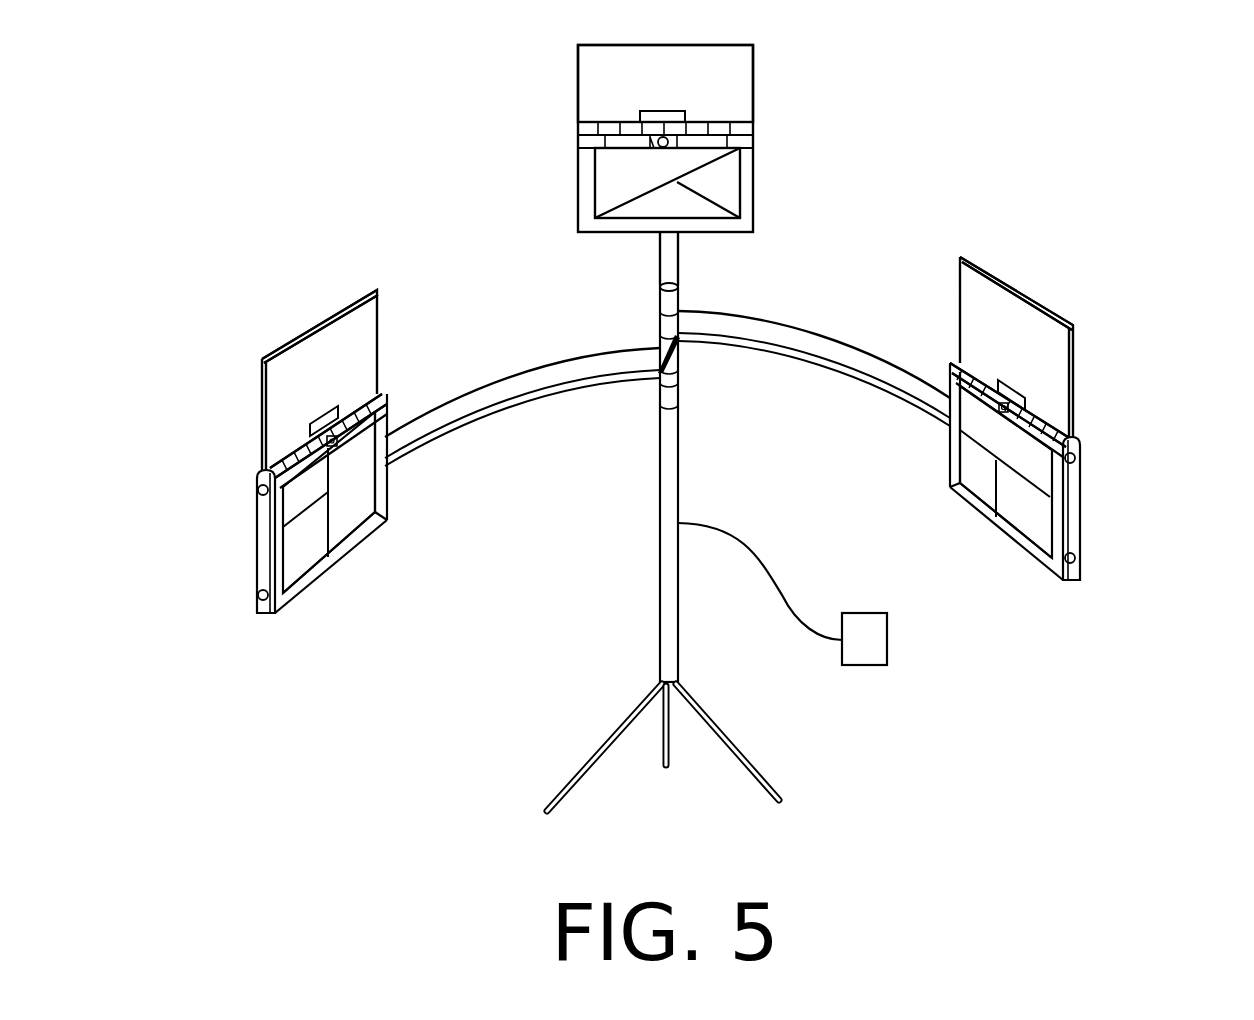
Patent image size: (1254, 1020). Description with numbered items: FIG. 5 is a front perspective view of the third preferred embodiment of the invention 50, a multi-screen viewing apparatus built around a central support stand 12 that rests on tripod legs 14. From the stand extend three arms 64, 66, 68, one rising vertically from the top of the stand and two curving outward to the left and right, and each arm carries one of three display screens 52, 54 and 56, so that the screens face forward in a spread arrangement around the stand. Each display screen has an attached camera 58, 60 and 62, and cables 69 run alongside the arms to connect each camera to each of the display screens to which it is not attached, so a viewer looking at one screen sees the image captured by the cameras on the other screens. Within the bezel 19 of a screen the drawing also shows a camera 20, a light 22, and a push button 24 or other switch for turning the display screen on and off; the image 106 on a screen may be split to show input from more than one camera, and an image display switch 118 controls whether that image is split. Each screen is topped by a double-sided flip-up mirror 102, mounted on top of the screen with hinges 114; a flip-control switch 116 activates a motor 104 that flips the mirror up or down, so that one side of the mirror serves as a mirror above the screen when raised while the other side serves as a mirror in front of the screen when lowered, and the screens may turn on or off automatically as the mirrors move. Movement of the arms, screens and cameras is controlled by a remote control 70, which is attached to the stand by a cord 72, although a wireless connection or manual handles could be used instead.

The support stand 12 is at (660, 610).
The tripod legs 14 is at (665, 770).
The bezel 19 is at (755, 185).
The camera 20 is at (336, 447).
The light 22 is at (580, 147).
The push button 24 is at (753, 146).
The third preferred embodiment of the invention 50 is at (678, 287).
The display screen 52 is at (1080, 508).
The display screen 54 is at (257, 545).
The display screen 56 is at (578, 190).
The camera 58 is at (1000, 412).
The camera 60 is at (287, 485).
The camera 62 is at (660, 148).
The arm 64 is at (862, 345).
The arm 66 is at (513, 363).
The arm 68 is at (660, 253).
The cables 69 is at (487, 405).
The remote control 70 is at (887, 640).
The cord 72 is at (765, 560).
The double-sided flip-up mirror 102 is at (578, 78).
The motor 104 is at (661, 110).
The image 106 is at (387, 525).
The hinge 114 is at (753, 140).
The flip-control switch 116 is at (257, 490).
The image display switch 118 is at (258, 598).